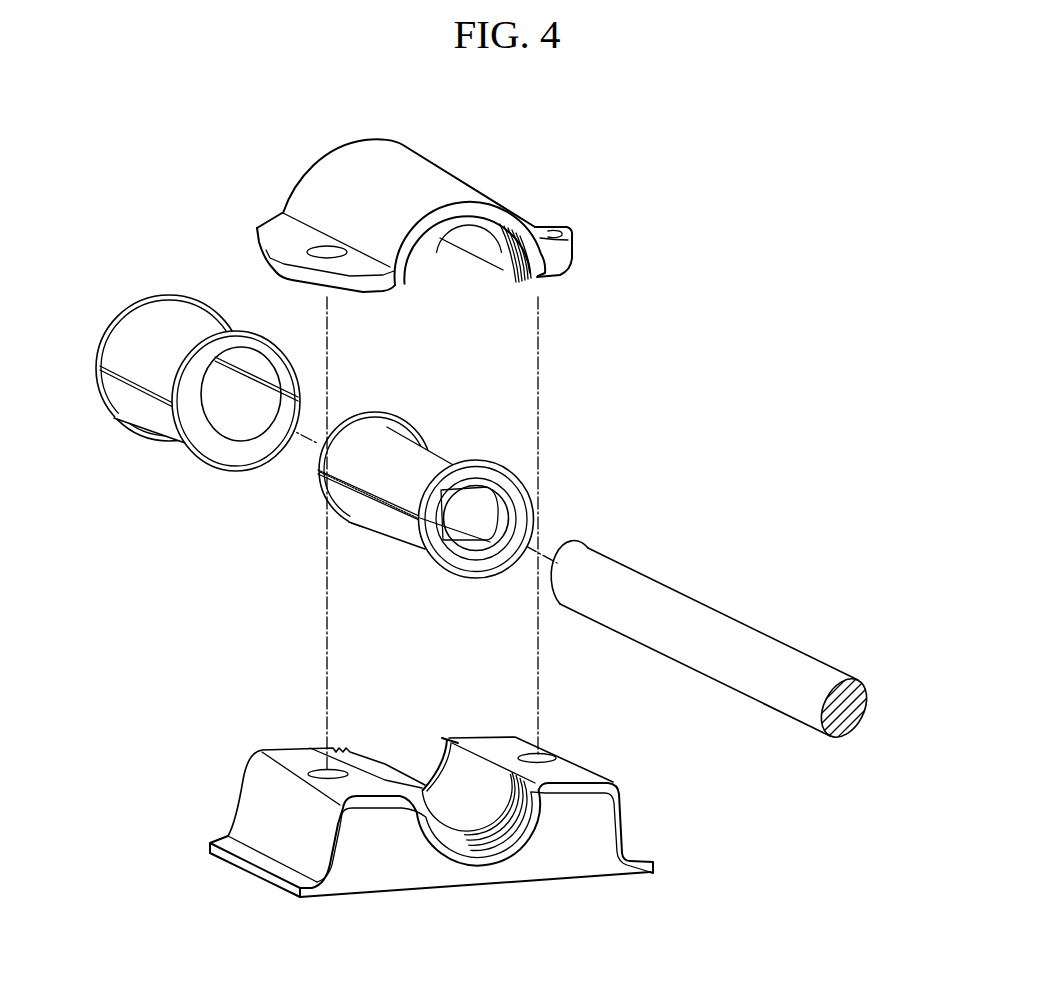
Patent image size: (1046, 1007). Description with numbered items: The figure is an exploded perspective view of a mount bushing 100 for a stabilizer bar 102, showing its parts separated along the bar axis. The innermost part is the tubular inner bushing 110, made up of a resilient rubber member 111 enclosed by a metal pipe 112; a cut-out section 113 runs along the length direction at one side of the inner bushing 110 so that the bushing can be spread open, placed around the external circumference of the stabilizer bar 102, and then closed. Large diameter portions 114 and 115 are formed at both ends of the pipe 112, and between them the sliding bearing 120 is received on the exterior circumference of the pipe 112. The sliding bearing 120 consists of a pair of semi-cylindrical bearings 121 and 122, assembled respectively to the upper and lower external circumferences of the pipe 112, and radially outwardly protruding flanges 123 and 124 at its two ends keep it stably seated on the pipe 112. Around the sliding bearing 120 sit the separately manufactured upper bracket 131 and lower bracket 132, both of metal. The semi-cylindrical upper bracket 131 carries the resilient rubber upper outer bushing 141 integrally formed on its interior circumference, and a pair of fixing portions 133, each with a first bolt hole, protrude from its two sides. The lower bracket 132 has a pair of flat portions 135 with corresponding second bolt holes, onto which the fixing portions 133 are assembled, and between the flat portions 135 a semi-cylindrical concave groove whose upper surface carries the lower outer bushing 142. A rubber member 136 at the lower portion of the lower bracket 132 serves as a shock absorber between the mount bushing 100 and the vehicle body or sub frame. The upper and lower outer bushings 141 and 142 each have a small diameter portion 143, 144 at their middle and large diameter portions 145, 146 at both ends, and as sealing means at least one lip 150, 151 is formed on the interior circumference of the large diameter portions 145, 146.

The mount bushing 100 is at (705, 232).
The stabilizer bar 102 is at (730, 630).
The inner bushing 110 is at (467, 480).
The rubber member 111 is at (482, 516).
The pipe 112 is at (510, 463).
The cut-out section 113 is at (375, 500).
The large diameter portion 114 is at (362, 417).
The large diameter portion 115 is at (449, 475).
The sliding bearing 120 is at (181, 379).
The bearing 121 is at (156, 318).
The bearing 122 is at (133, 400).
The flange 123 is at (107, 337).
The flange 124 is at (235, 330).
The upper bracket 131 is at (449, 214).
The lower bracket 132 is at (463, 805).
The fixing portion 133 is at (270, 236).
The flat portion 135 is at (290, 757).
The rubber member 136 is at (382, 858).
The upper outer bushing 141 is at (503, 272).
The lower outer bushing 142 is at (487, 755).
The small diameter portion 143 is at (473, 222).
The small diameter portion 144 is at (460, 820).
The large diameter portion 145 is at (427, 263).
The large diameter portion 146 is at (437, 763).
The lip 150 is at (422, 786).
The lip 151 is at (517, 827).